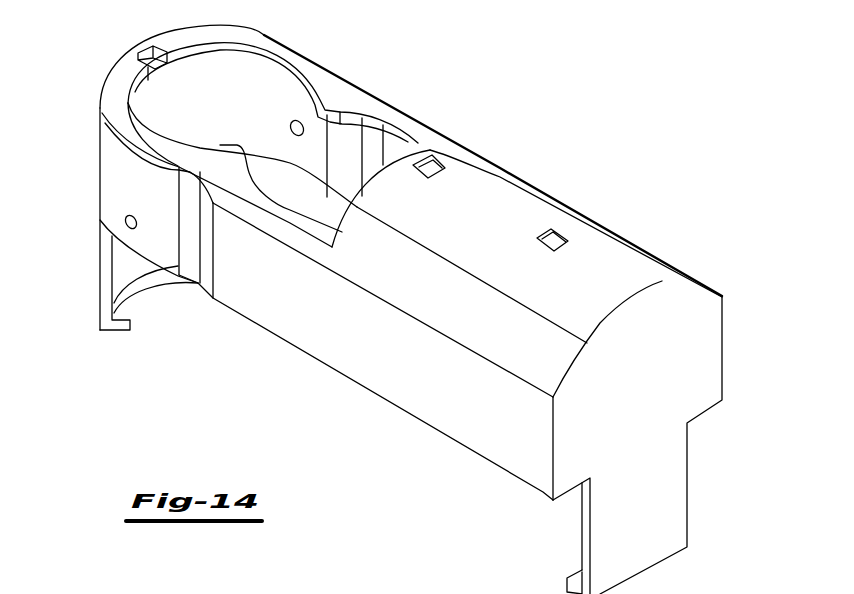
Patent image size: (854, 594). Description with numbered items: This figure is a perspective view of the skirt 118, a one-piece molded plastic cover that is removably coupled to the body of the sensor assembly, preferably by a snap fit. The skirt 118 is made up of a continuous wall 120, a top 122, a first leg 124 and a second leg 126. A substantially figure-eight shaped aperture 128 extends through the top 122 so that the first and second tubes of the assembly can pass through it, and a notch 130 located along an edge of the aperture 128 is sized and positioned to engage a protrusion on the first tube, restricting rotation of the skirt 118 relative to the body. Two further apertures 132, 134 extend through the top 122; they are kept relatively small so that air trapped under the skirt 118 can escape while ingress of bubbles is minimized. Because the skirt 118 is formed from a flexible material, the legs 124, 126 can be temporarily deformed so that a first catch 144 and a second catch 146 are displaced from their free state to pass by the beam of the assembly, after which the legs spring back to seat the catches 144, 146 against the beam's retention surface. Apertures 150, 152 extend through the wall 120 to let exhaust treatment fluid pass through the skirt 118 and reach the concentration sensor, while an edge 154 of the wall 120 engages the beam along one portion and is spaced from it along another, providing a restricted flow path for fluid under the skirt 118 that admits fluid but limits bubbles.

The skirt 118 is at (672, 267).
The continuous wall 120 is at (370, 364).
The top 122 is at (500, 190).
The first leg 124 is at (647, 530).
The second leg 126 is at (108, 270).
The figure-eight shaped aperture 128 is at (277, 60).
The notch 130 is at (150, 50).
The aperture 132 is at (432, 168).
The aperture 134 is at (552, 238).
The first catch 144 is at (575, 575).
The second catch 146 is at (128, 296).
The aperture 150 is at (126, 227).
The aperture 152 is at (291, 123).
The edge 154 is at (425, 427).